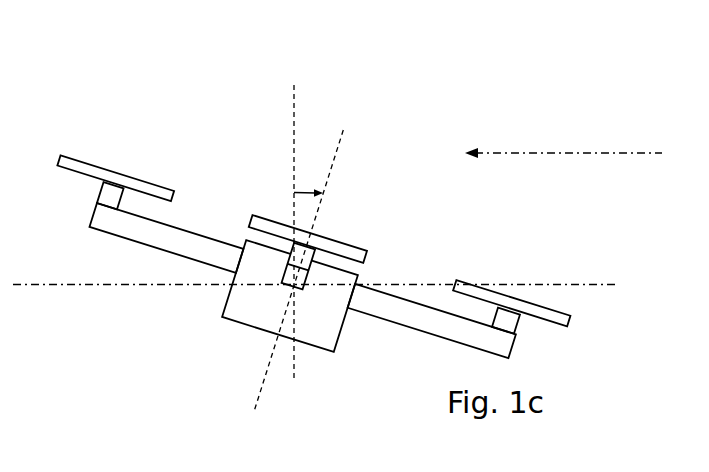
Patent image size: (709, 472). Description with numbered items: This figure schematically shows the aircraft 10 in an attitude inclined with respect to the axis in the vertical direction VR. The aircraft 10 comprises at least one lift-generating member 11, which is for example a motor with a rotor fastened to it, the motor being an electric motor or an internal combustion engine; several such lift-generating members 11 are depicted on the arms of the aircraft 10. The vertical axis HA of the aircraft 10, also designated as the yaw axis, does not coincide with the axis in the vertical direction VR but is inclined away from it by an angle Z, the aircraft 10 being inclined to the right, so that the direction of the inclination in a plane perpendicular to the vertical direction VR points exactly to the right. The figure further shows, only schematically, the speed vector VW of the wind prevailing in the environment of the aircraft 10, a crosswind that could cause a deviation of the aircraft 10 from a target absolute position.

The aircraft 10 is at (338, 213).
The lift-generating member 11 is at (77, 158).
The vertical direction VR is at (295, 93).
The vertical axis HA is at (338, 147).
The angle Z is at (307, 190).
The speed vector of the wind VW is at (617, 115).